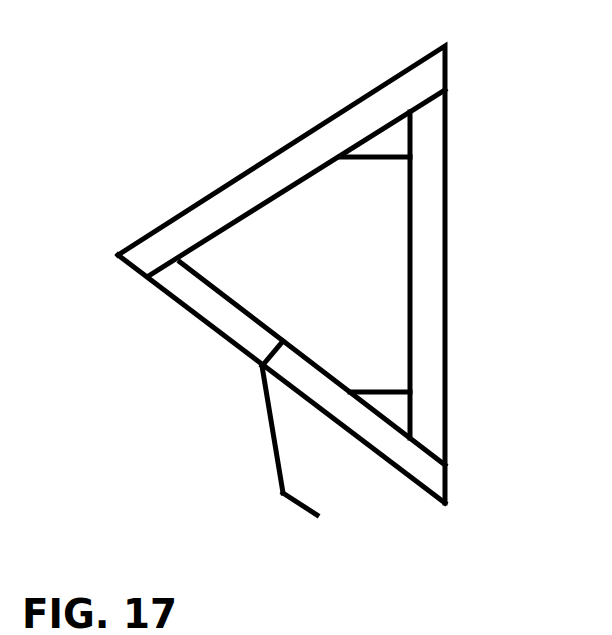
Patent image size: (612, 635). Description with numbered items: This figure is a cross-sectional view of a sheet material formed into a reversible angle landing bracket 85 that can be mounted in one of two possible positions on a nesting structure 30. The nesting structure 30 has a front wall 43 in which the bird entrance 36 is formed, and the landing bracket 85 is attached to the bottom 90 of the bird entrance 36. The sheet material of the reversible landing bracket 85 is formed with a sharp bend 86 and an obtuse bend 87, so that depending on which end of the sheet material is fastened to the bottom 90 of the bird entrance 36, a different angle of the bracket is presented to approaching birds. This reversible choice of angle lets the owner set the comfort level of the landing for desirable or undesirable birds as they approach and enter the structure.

The nesting structure 30 is at (480, 23).
The front wall 43 is at (160, 289).
The bird entrance 36 is at (132, 312).
The reversible landing bracket 85 is at (238, 362).
The sharp bend 86 is at (263, 358).
The obtuse bend 87 is at (307, 500).
The bottom of bird entrance 90 is at (278, 343).